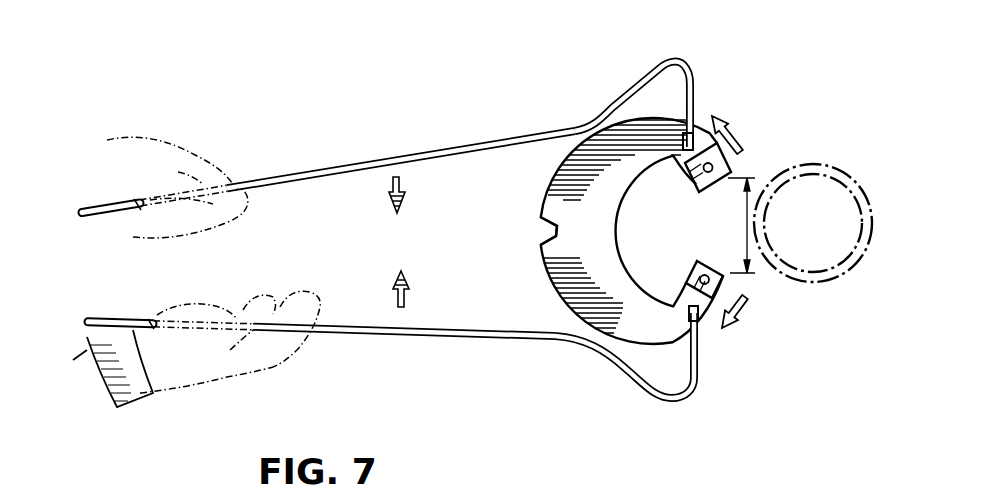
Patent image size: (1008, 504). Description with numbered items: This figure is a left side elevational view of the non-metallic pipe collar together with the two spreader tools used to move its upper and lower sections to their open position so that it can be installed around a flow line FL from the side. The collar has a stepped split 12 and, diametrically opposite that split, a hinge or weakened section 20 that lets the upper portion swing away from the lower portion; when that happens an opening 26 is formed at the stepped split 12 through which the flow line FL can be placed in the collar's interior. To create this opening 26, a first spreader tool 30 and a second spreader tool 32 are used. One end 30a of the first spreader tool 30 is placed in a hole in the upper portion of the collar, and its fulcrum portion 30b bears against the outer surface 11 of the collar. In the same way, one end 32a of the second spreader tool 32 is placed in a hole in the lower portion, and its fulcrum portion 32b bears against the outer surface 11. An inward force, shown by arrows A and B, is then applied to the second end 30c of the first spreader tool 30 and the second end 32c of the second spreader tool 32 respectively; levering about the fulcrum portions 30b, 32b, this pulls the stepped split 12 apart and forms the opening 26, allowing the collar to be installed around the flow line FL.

The outer surface 11 is at (550, 167).
The stepped split 12 is at (722, 168).
The hinge or weakened section 20 is at (543, 229).
The opening 26 is at (743, 232).
The first spreader tool 30 is at (344, 166).
The one end of the first spreader tool 30a is at (700, 105).
The fulcrum portion of the first spreader tool 30b is at (582, 118).
The second end of the first spreader tool 30c is at (93, 208).
The second spreader tool 32 is at (417, 340).
The one end of the second spreader tool 32a is at (708, 340).
The fulcrum portion of the second spreader tool 32b is at (580, 344).
The second end of the second spreader tool 32c is at (86, 317).
The flow line FL is at (836, 168).
The arrow A is at (386, 197).
The arrow B is at (412, 302).